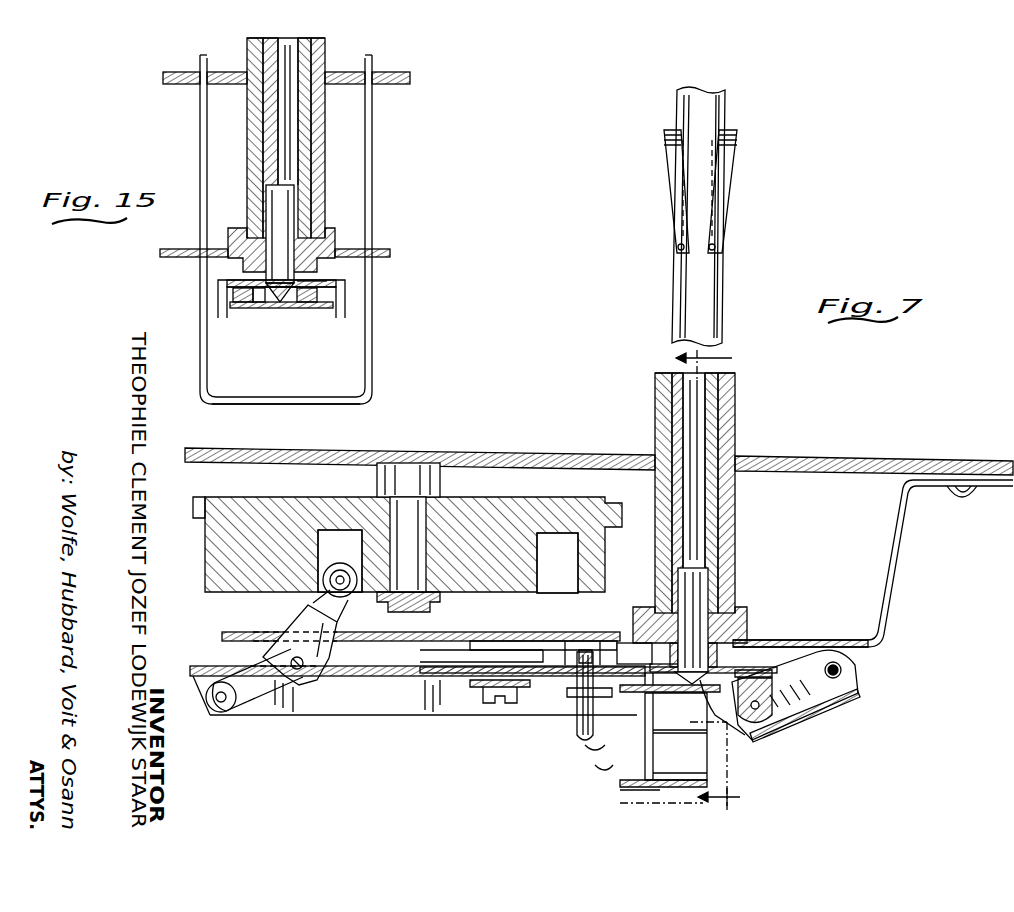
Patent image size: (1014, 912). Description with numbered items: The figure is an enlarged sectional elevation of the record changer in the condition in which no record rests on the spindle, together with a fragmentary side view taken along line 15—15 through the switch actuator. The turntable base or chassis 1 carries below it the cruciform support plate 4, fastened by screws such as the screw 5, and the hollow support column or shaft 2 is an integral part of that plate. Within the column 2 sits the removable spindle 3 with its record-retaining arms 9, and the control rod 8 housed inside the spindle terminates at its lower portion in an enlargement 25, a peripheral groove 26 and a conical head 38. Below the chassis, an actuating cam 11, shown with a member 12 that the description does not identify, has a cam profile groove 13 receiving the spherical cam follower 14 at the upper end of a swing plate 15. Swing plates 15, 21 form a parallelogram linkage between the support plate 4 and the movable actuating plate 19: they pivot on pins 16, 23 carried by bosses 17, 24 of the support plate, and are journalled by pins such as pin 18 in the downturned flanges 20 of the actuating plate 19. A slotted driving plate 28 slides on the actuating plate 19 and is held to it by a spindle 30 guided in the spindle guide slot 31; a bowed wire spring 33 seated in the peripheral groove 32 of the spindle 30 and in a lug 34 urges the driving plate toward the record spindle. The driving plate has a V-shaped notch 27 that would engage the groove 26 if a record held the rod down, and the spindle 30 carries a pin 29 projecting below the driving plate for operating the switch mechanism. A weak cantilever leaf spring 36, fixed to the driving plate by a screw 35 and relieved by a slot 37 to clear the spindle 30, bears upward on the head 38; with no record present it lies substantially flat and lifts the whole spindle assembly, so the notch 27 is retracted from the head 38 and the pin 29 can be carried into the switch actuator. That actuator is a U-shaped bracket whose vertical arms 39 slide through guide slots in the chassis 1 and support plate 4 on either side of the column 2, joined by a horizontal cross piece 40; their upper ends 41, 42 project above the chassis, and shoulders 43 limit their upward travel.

In FIG. 7, the turntable base or chassis 1 is at (795, 455).
In FIG. 15, the support column or shaft 2 is at (325, 64).
In FIG. 7, the support column or shaft 2 is at (735, 424).
In FIG. 15, the spindle 3 is at (302, 110).
In FIG. 7, the spindle 3 is at (680, 370).
In FIG. 15, the turntable base or support plate 4 is at (182, 249).
In FIG. 7, the turntable base or support plate 4 is at (783, 640).
In FIG. 7, the screw 5 is at (973, 492).
In FIG. 15, the control rod 8 is at (290, 158).
In FIG. 7, the control rod 8 is at (697, 540).
In FIG. 7, the record supporting arms 9 is at (663, 162).
In FIG. 7, the actuating cam 11 is at (315, 497).
In FIG. 7, the fastening bolt 12 is at (385, 498).
In FIG. 7, the cam profile groove 13 is at (335, 529).
In FIG. 7, the spherical cam follower 14 is at (330, 606).
In FIG. 7, the swing plate 15 is at (694, 578).
In FIG. 7, the pin 16 is at (296, 675).
In FIG. 7, the projection or boss 17 is at (258, 660).
In FIG. 7, the pin 18 is at (220, 714).
In FIG. 15, the movable actuating plate 19 is at (230, 283).
In FIG. 7, the movable actuating plate 19 is at (348, 678).
In FIG. 15, the flange 20 is at (220, 303).
In FIG. 7, the flange 20 is at (390, 702).
In FIG. 7, the swing plate 21 is at (810, 720).
In FIG. 7, the pin 23 is at (837, 678).
In FIG. 7, the projection or boss 24 is at (858, 663).
In FIG. 15, the enlargement 25 is at (290, 195).
In FIG. 7, the enlargement 25 is at (700, 580).
In FIG. 15, the peripheral groove 26 is at (327, 279).
In FIG. 7, the peripheral groove 26 is at (724, 638).
In FIG. 15, the V-shaped notch 27 is at (310, 306).
In FIG. 7, the V-shaped notch 27 is at (673, 692).
In FIG. 15, the slotted driving plate 28 is at (260, 305).
In FIG. 7, the slotted driving plate 28 is at (530, 676).
In FIG. 7, the pin 29 is at (575, 732).
In FIG. 7, the spindle 30 is at (605, 650).
In FIG. 7, the spindle guide slot 31 is at (530, 660).
In FIG. 7, the peripheral groove 32 is at (590, 665).
In FIG. 7, the bowed wire spring 33 is at (470, 641).
In FIG. 7, the lug 34 is at (422, 640).
In FIG. 7, the screw 35 is at (485, 698).
In FIG. 15, the leaf spring 36 is at (245, 307).
In FIG. 7, the leaf spring 36 is at (700, 715).
In FIG. 7, the slot 37 is at (620, 700).
In FIG. 15, the conical end or head 38 is at (272, 306).
In FIG. 7, the conical end or head 38 is at (735, 677).
In FIG. 15, the actuator arms 39 is at (200, 145).
In FIG. 15, the cross piece 40 is at (322, 405).
In FIG. 7, the cross piece 40 is at (668, 790).
In FIG. 15, the end 41 is at (200, 58).
In FIG. 15, the end 42 is at (372, 60).
In FIG. 15, the lug or shoulder 43 is at (373, 260).